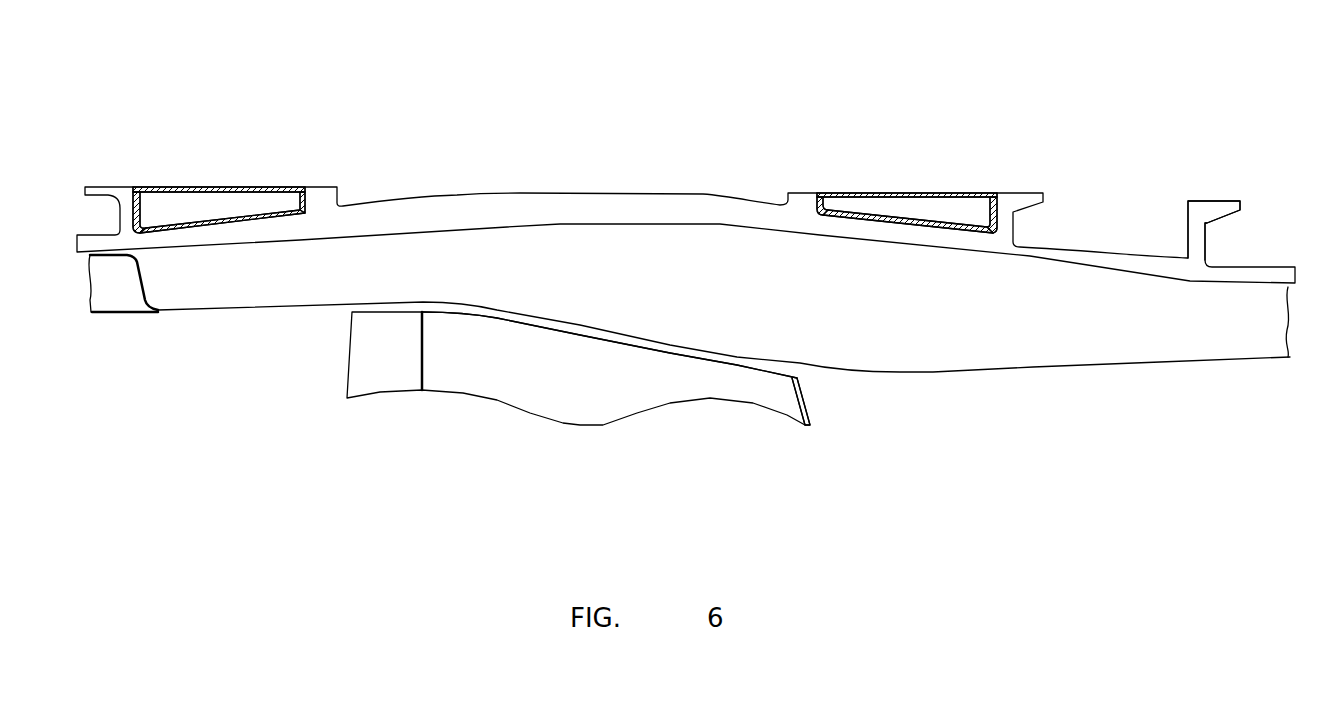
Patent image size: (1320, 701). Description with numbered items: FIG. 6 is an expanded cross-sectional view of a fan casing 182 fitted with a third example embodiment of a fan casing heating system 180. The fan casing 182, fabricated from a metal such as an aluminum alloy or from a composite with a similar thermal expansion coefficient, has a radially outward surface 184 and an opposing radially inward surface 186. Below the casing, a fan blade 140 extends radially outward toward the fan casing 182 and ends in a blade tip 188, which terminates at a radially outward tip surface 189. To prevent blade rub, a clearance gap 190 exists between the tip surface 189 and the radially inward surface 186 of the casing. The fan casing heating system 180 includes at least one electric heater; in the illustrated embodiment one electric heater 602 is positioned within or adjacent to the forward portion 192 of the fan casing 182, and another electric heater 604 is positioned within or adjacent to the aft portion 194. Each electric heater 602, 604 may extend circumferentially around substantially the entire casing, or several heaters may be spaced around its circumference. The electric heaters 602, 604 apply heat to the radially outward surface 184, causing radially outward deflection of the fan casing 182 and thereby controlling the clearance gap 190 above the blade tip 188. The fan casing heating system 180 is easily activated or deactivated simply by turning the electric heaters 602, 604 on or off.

The fan casing heating system 180 is at (722, 95).
The fan casing 182 is at (502, 194).
The radially outward surface 184 is at (1070, 250).
The radially inward surface 186 is at (1050, 368).
The blade tip 188 is at (582, 368).
The tip surface 189 is at (583, 340).
The clearance gap 190 is at (815, 375).
The forward portion 192 is at (285, 173).
The aft portion 194 is at (844, 183).
The fan blade 140 is at (492, 371).
The electric heater 602 is at (213, 187).
The electric heater 604 is at (900, 192).